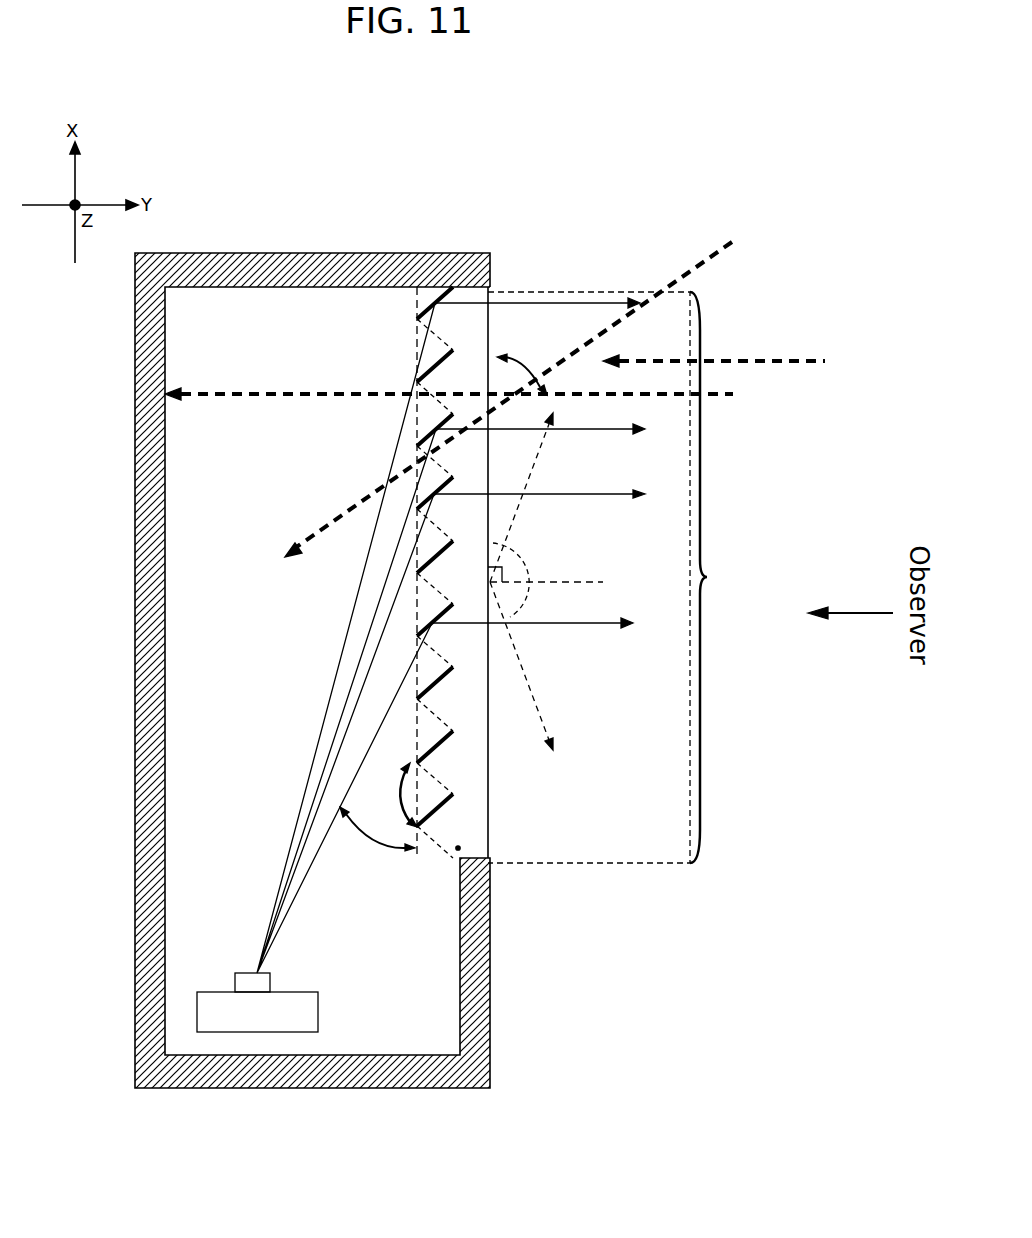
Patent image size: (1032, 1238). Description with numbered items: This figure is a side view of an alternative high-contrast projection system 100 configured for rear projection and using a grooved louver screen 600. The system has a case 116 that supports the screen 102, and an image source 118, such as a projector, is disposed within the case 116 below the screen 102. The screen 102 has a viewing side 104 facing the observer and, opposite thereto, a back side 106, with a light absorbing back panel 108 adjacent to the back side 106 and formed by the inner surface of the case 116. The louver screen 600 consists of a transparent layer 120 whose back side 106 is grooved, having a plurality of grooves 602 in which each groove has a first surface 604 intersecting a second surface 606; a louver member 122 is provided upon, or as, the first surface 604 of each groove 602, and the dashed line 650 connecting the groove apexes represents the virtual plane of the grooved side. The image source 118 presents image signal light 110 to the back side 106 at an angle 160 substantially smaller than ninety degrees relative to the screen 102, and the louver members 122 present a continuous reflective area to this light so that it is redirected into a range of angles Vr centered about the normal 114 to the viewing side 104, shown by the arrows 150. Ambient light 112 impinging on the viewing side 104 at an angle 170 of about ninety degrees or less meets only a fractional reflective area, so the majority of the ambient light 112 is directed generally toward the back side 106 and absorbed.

The high-contrast projection system 100 is at (458, 191).
The screen 102 is at (618, 577).
The viewing side 104 is at (491, 847).
The back side 106 is at (432, 300).
The light absorbing back panel 108 is at (165, 535).
The image signal light 110 is at (283, 905).
The ambient light 112 is at (512, 390).
The normal 114 is at (563, 579).
The case 116 is at (220, 253).
The image source 118 is at (265, 1019).
The transparent layer 120 is at (458, 848).
The louver member 122 is at (461, 802).
The reflected light 150 is at (490, 582).
The angle 160 is at (380, 848).
The angle 170 is at (533, 382).
The louver screen 600 is at (499, 327).
The groove 602 is at (399, 797).
The first surface 604 is at (449, 819).
The second surface 606 is at (447, 775).
The dashed line 650 is at (412, 872).